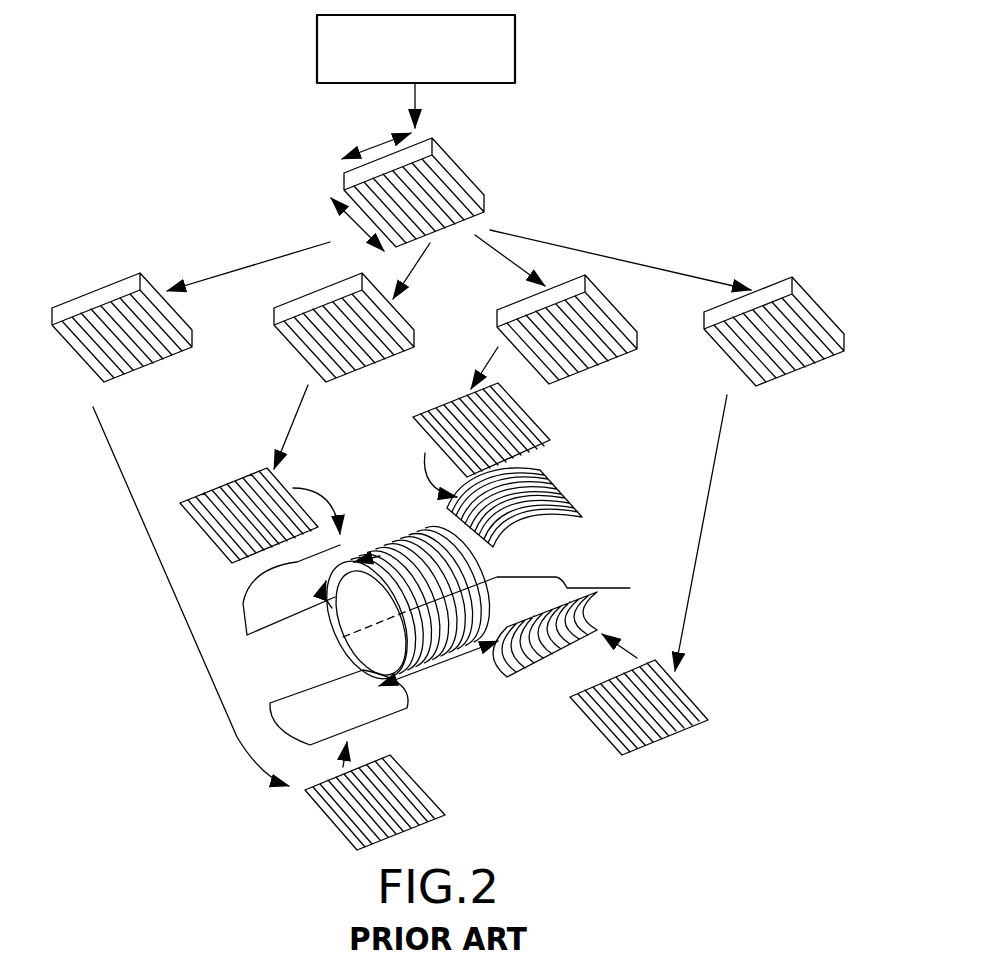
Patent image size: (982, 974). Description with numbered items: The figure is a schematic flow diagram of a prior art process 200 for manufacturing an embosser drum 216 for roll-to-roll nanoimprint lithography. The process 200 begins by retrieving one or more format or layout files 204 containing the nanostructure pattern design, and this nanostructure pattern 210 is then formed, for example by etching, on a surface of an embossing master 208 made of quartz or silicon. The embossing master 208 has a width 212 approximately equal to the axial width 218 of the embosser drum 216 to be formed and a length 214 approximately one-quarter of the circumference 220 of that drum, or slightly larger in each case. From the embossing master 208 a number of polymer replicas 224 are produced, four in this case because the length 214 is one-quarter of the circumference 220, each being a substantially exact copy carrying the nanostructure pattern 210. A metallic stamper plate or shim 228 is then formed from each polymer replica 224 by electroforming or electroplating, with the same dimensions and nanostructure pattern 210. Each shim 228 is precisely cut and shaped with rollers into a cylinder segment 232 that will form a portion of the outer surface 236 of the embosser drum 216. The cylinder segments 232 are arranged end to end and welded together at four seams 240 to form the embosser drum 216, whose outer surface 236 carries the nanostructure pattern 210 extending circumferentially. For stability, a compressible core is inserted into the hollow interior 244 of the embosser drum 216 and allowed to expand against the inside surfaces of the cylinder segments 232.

The process 200 is at (766, 104).
The format or layout files 204 is at (317, 50).
The embossing master 208 is at (440, 141).
The nanostructure pattern 210 is at (447, 185).
The width 212 is at (380, 145).
The length 214 is at (325, 213).
The embosser drum 216 is at (497, 563).
The axial width 218 is at (430, 670).
The circumference 220 is at (343, 653).
The polymer replicas 224 is at (297, 298).
The metallic stamper plate or shim 228 is at (180, 503).
The cylinder segment 232 is at (243, 608).
The outer surface 236 is at (507, 640).
The seam 240 is at (507, 605).
The hollow interior 244 is at (352, 590).